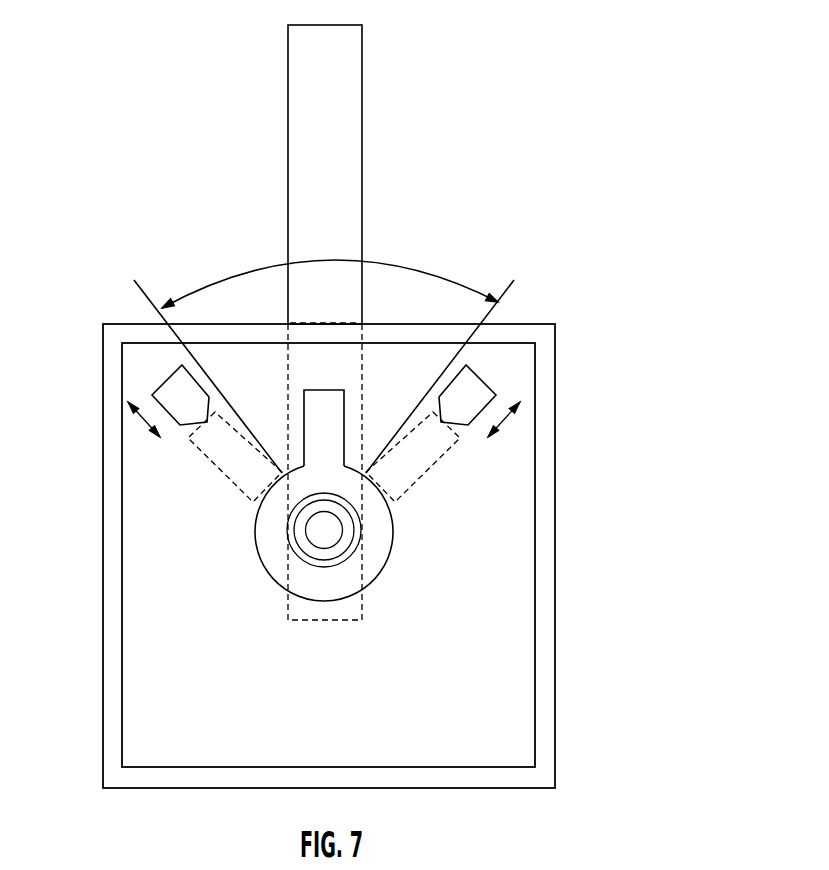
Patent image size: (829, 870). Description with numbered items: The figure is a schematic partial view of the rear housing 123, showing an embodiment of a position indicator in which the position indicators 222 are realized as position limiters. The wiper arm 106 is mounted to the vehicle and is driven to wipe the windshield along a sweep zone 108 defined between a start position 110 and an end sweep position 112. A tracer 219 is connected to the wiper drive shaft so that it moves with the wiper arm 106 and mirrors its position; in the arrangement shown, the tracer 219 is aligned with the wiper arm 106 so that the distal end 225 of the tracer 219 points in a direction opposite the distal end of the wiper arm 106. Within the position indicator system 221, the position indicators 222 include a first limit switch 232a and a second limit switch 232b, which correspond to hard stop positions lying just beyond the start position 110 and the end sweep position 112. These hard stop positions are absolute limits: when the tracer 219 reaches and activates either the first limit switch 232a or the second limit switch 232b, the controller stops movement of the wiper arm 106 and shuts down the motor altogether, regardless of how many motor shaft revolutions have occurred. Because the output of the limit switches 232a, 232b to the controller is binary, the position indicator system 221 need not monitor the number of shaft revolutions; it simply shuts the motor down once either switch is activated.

The wiper arm 106 is at (338, 145).
The sweep zone 108 is at (227, 272).
The start position 110 is at (147, 300).
The end sweep position 112 is at (500, 300).
The distal end of the tracer 225 is at (333, 380).
The tracer 219 is at (337, 418).
The first limit switch 232a is at (165, 382).
The second limit switch 232b is at (477, 388).
The position indicator system 221 is at (580, 387).
The rear housing 123 is at (122, 617).
The position indicators 222 is at (470, 447).